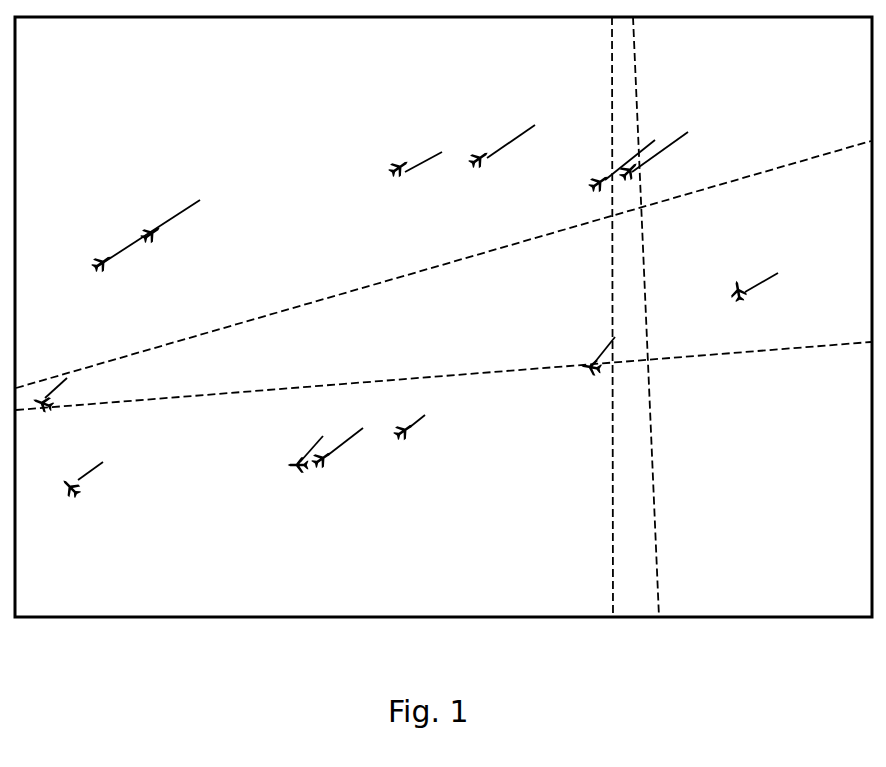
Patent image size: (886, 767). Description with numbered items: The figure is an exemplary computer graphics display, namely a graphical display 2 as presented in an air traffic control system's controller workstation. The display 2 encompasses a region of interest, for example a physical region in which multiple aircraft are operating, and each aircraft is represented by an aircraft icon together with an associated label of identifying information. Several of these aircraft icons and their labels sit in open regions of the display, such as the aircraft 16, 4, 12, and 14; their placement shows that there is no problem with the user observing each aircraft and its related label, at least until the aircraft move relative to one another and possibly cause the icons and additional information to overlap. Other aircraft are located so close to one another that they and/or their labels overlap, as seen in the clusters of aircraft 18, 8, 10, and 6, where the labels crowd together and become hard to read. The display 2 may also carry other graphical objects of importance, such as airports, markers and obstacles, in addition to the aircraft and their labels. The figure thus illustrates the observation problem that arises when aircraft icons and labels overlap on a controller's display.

The graphical display 2 is at (708, 617).
The aircraft 4 is at (70, 500).
The cluster of aircraft 6 is at (393, 449).
The cluster of aircraft 8 is at (497, 161).
The cluster of aircraft 10 is at (677, 169).
The aircraft 12 is at (585, 375).
The aircraft 14 is at (743, 300).
The aircraft 16 is at (40, 412).
The cluster of aircraft 18 is at (185, 238).